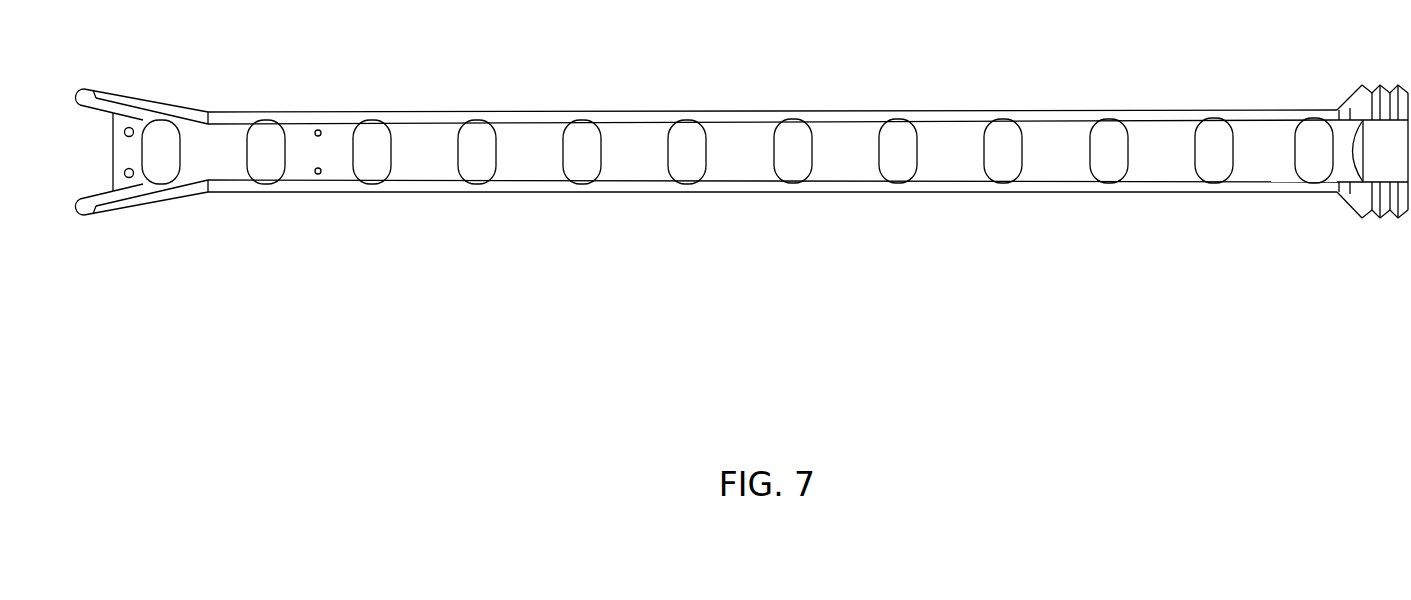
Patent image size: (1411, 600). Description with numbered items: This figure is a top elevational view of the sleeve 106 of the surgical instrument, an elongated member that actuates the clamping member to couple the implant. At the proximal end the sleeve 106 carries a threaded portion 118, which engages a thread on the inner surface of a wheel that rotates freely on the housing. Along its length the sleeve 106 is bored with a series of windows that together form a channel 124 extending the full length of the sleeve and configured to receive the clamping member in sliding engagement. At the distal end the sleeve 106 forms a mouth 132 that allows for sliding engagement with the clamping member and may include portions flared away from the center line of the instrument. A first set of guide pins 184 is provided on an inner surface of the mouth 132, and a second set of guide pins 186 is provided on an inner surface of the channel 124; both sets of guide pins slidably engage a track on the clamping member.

The sleeve 106 is at (855, 112).
The threaded portion 118 is at (1362, 85).
The channel 124 is at (529, 145).
The mouth 132 is at (192, 163).
The first set of guide pins 184 is at (131, 128).
The second set of guide pins 186 is at (320, 128).